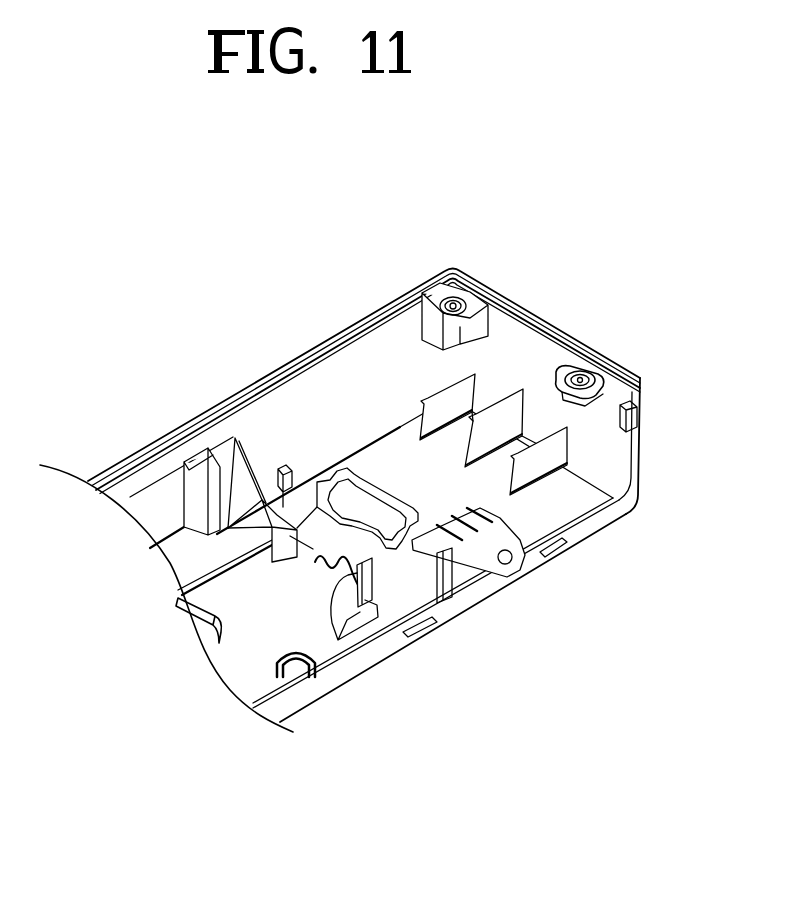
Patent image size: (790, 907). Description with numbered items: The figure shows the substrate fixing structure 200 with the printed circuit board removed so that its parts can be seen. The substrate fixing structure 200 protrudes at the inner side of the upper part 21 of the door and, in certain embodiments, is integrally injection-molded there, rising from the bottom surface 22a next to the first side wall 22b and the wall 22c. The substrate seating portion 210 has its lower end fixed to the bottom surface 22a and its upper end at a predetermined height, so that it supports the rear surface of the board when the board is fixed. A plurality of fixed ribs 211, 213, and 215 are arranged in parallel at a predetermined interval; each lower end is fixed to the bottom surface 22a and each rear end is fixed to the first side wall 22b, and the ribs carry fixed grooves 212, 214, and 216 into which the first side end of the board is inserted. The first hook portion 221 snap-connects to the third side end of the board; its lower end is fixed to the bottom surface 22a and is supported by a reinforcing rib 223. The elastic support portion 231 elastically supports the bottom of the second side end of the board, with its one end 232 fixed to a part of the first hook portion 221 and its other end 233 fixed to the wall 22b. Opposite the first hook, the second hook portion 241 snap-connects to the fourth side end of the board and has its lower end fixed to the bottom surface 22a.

The substrate fixing structure 200 is at (532, 382).
The upper part 21 is at (370, 313).
The substrate seating portion 210 is at (360, 478).
The fixed rib 211 is at (450, 385).
The fixed groove 212 is at (425, 412).
The fixed rib 213 is at (524, 388).
The fixed groove 214 is at (496, 423).
The fixed rib 215 is at (545, 436).
The fixed groove 216 is at (517, 493).
The bottom surface 22a is at (477, 488).
The first side wall 22b is at (593, 440).
The third side wall 22c is at (250, 427).
The first hook portion 221 is at (435, 607).
The reinforcing rib 223 is at (368, 572).
The elastic support portion 231 is at (352, 610).
The one end 232 is at (372, 600).
The other end 233 is at (290, 585).
The second hook portion 241 is at (283, 470).